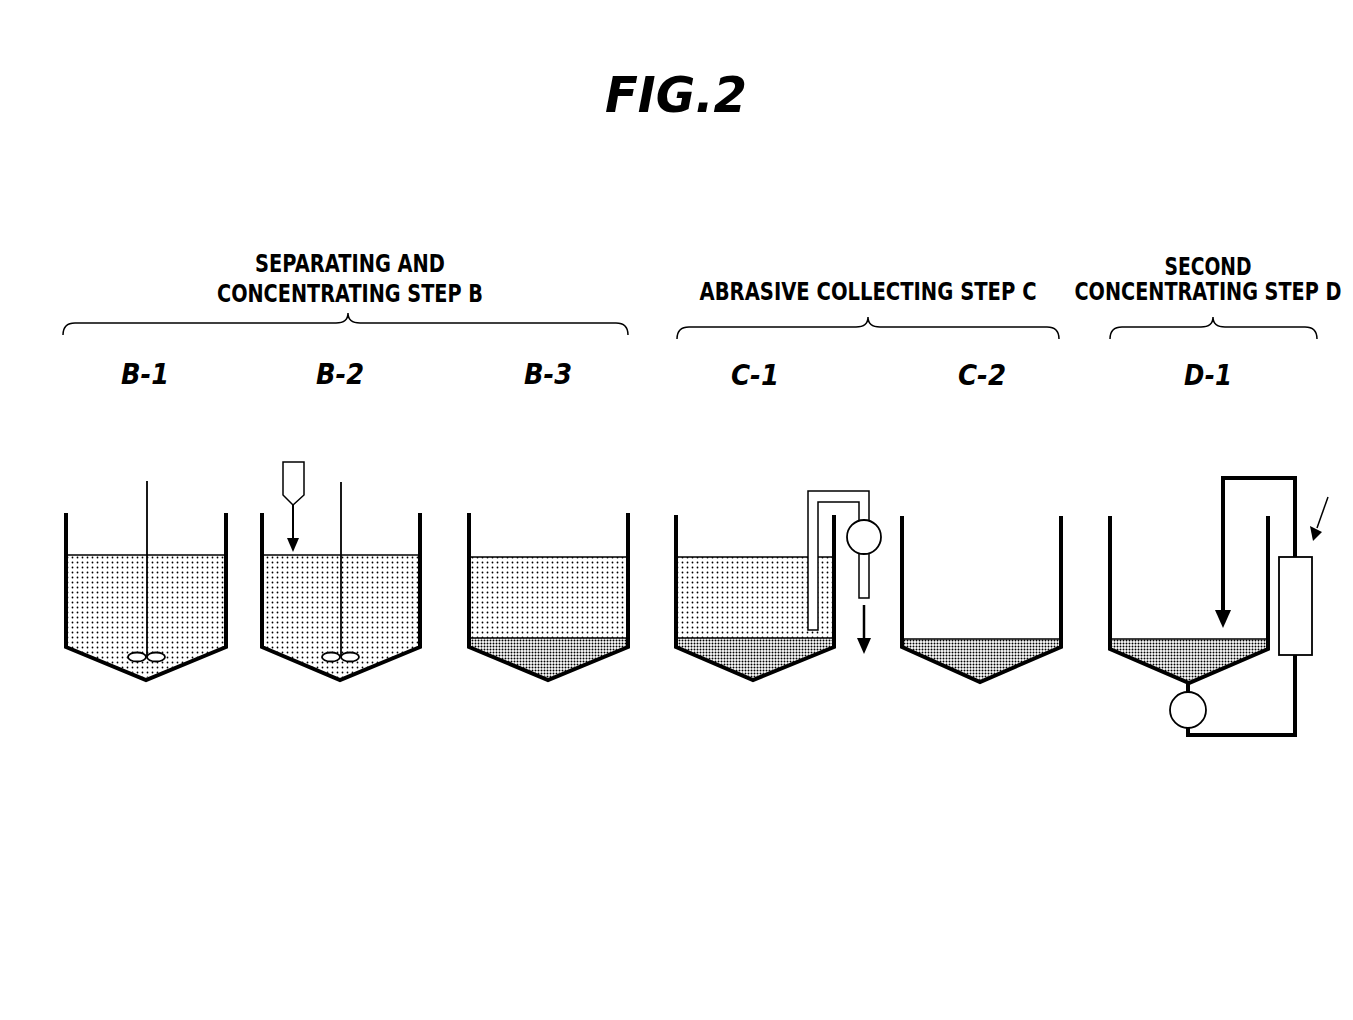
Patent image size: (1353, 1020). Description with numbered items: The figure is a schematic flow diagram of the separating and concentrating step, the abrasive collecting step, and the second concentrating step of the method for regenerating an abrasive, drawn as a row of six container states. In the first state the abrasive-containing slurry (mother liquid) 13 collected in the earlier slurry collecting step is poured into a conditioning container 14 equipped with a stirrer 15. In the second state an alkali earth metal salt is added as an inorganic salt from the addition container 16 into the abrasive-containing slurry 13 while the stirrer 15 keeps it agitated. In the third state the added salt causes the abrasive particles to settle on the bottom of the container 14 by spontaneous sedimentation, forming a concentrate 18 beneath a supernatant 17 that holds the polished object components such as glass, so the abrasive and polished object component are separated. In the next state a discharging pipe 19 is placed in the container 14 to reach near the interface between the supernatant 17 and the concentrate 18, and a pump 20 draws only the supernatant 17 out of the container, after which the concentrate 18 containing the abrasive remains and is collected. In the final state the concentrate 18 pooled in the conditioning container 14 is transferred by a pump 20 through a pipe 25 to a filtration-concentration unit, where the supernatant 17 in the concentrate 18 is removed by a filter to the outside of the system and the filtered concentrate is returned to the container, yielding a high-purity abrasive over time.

The abrasive-containing slurry (mother liquid) 13 is at (112, 627).
The conditioning container 14 is at (197, 663).
The stirrer 15 is at (150, 491).
The addition container 16 is at (304, 462).
The supernatant 17 is at (513, 578).
The concentrate 18 is at (523, 663).
The discharging pipe 19 is at (835, 488).
The pump 20 is at (873, 520).
The pipe 25 is at (1252, 740).